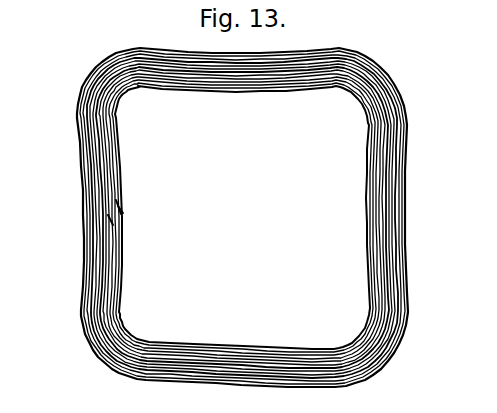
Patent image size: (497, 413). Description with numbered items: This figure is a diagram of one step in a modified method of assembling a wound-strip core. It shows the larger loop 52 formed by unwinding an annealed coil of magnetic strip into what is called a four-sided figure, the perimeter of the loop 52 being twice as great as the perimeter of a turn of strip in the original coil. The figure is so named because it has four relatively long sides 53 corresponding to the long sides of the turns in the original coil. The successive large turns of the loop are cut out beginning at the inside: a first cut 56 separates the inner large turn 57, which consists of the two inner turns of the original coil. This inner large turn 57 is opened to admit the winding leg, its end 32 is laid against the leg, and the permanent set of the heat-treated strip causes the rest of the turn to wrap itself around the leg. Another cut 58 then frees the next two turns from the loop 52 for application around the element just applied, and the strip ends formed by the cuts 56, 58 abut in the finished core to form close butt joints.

The loop 52 is at (378, 73).
The long sides 53 is at (202, 50).
The inner large turn 57 is at (197, 88).
The end 32 is at (120, 207).
The cut 56 is at (120, 210).
The cut 58 is at (112, 220).